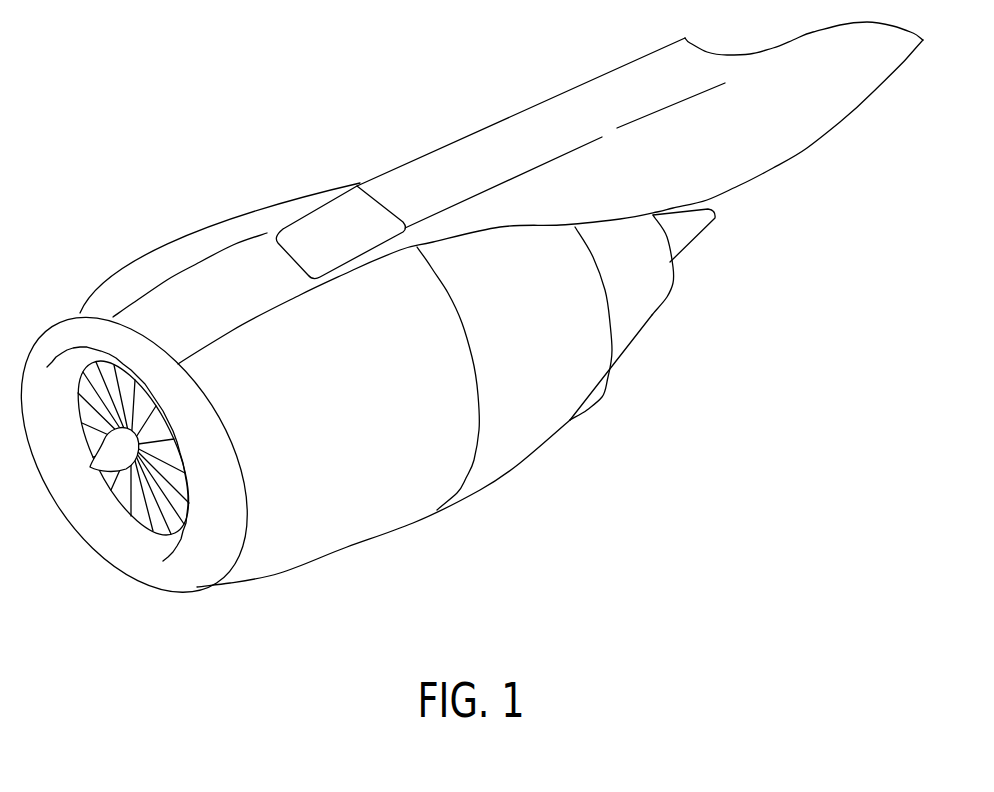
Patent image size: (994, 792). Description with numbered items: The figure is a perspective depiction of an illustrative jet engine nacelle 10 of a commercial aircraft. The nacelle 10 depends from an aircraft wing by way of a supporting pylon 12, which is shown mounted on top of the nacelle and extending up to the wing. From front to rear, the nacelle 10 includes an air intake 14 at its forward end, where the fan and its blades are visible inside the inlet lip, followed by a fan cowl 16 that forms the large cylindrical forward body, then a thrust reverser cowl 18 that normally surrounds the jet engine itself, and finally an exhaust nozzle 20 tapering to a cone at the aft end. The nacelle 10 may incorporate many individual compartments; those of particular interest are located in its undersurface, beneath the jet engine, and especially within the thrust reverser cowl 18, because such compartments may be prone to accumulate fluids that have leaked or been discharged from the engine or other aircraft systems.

The jet engine nacelle 10 is at (147, 178).
The supporting pylon 12 is at (525, 102).
The air intake 14 is at (82, 572).
The fan cowl 16 is at (382, 483).
The thrust reverser cowl 18 is at (553, 388).
The exhaust nozzle 20 is at (652, 315).